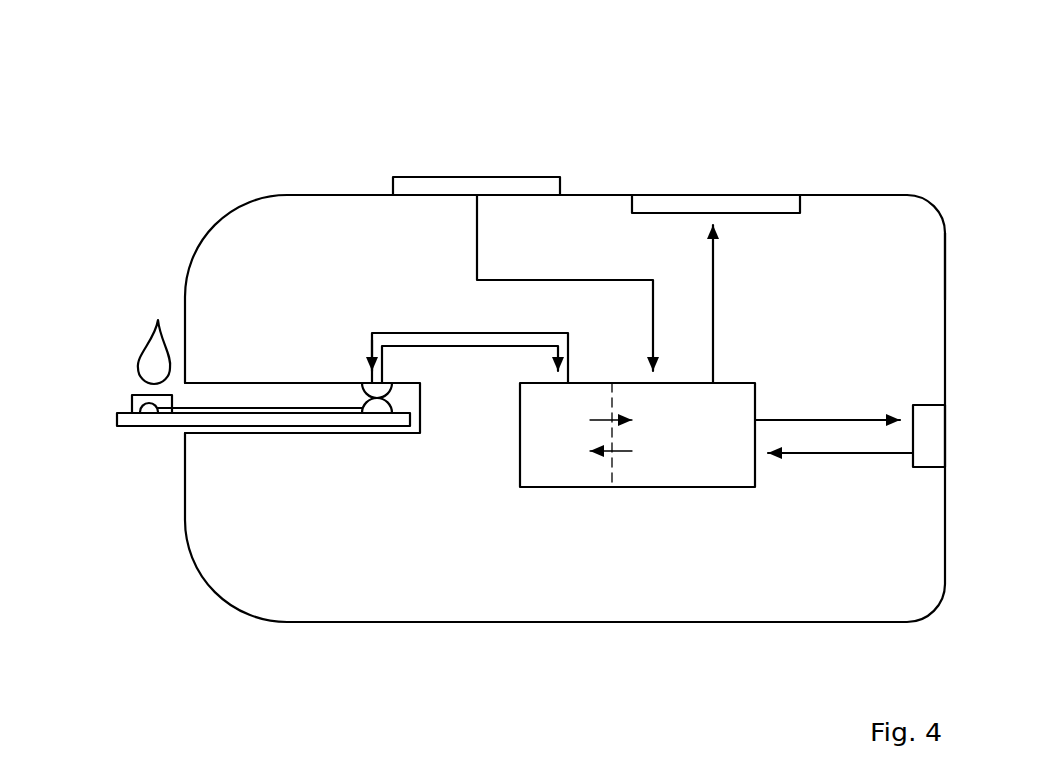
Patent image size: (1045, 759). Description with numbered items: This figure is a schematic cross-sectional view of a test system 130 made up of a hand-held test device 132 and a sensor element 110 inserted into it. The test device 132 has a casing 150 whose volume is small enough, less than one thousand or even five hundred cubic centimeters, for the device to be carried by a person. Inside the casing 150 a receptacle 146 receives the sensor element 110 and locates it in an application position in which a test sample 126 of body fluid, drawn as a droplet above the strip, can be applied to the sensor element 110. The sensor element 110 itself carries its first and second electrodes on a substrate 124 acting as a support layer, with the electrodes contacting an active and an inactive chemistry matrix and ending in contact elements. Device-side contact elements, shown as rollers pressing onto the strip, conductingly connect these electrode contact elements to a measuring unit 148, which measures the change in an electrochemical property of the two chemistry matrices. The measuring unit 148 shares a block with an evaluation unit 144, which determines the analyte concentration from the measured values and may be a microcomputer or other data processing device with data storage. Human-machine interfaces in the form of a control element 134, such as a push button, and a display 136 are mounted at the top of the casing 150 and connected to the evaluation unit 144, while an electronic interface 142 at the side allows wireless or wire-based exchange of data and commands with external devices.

The sensor element 110 is at (222, 445).
The substrate 124 is at (243, 433).
The test sample 126 is at (145, 358).
The test system 130 is at (523, 323).
The test device 132 is at (295, 160).
The control element 134 is at (470, 188).
The display 136 is at (707, 195).
The electronic interface 142 is at (923, 403).
The evaluation unit 144 is at (637, 475).
The receptacle 146 is at (305, 426).
The measuring unit 148 is at (562, 468).
The casing 150 is at (853, 195).